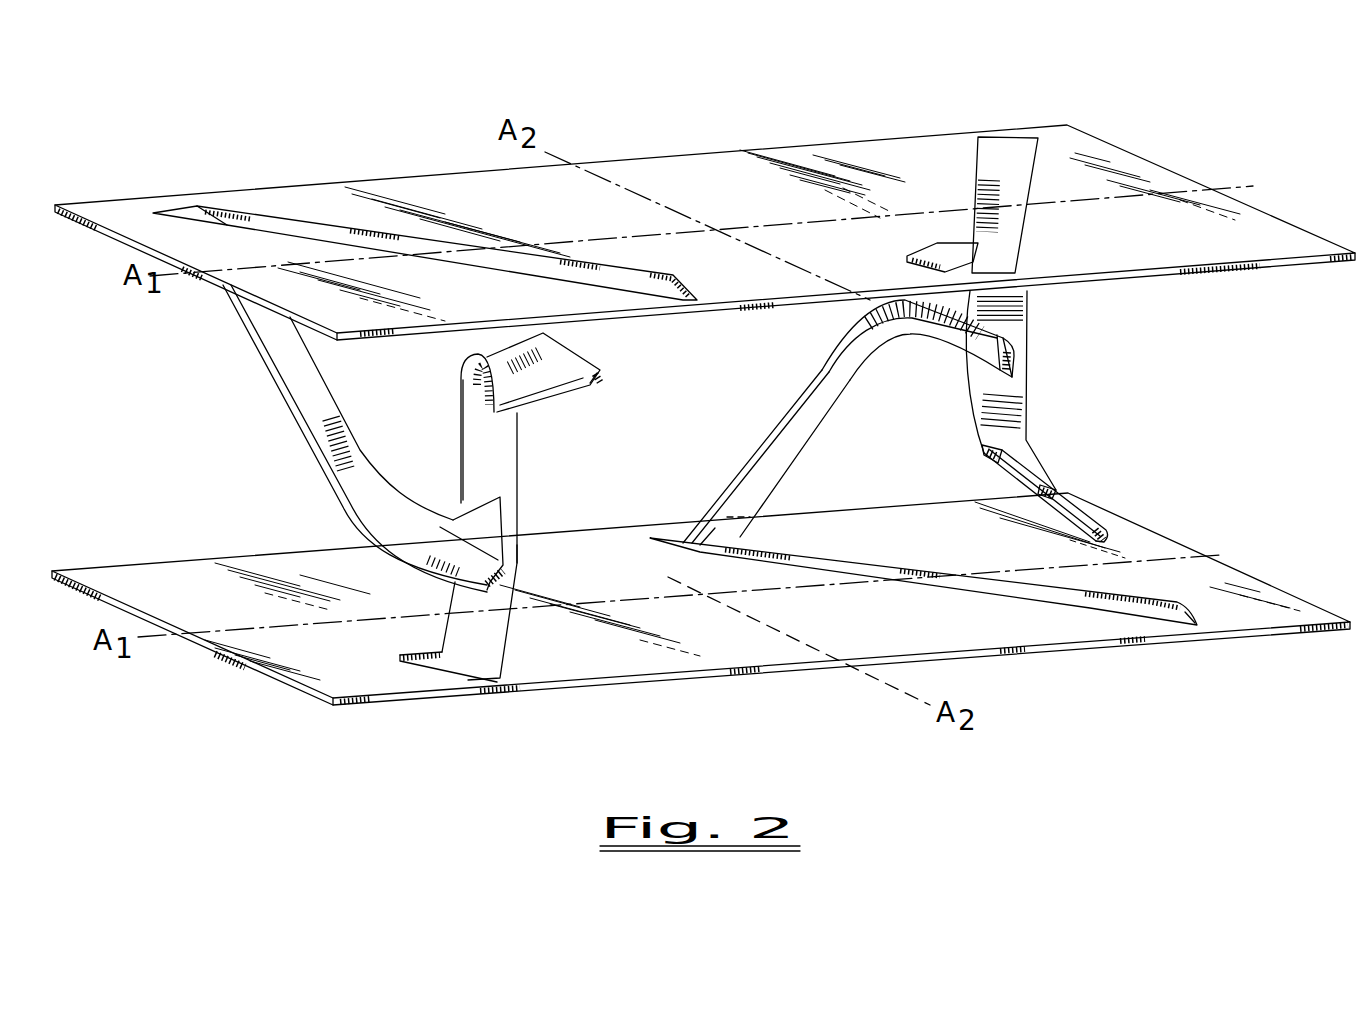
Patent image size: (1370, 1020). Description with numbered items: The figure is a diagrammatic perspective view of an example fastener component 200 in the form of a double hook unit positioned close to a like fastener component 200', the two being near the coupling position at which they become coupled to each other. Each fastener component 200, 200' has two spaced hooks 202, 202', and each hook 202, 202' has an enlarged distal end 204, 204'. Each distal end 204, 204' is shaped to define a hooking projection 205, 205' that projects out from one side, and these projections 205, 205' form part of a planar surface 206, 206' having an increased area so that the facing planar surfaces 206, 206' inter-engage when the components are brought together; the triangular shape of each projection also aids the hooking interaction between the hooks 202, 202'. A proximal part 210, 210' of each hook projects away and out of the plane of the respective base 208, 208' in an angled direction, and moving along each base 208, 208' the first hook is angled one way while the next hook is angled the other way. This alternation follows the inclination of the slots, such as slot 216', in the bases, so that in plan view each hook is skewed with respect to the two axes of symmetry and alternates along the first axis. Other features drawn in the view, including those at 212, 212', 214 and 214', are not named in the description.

The fastener component 200 is at (709, 207).
The like fastener component 200' is at (701, 599).
The hook 202 is at (664, 427).
The hook 202' is at (753, 446).
The enlarged distal end 204 is at (804, 501).
The enlarged distal end 204' is at (750, 361).
The hooking projection 205 is at (795, 574).
The hooking projection 205' is at (787, 368).
The planar surface 206 is at (715, 483).
The planar surface 206' is at (798, 400).
The base 208 is at (756, 231).
The base 208' is at (719, 642).
The proximal part 210 is at (610, 333).
The proximal part 210' is at (666, 567).
The slot in first panel 212 is at (620, 187).
The slot in second panel 212' is at (923, 537).
The leg portion 214 is at (588, 456).
The second leg portion 214' is at (628, 429).
The slot 216' is at (797, 707).